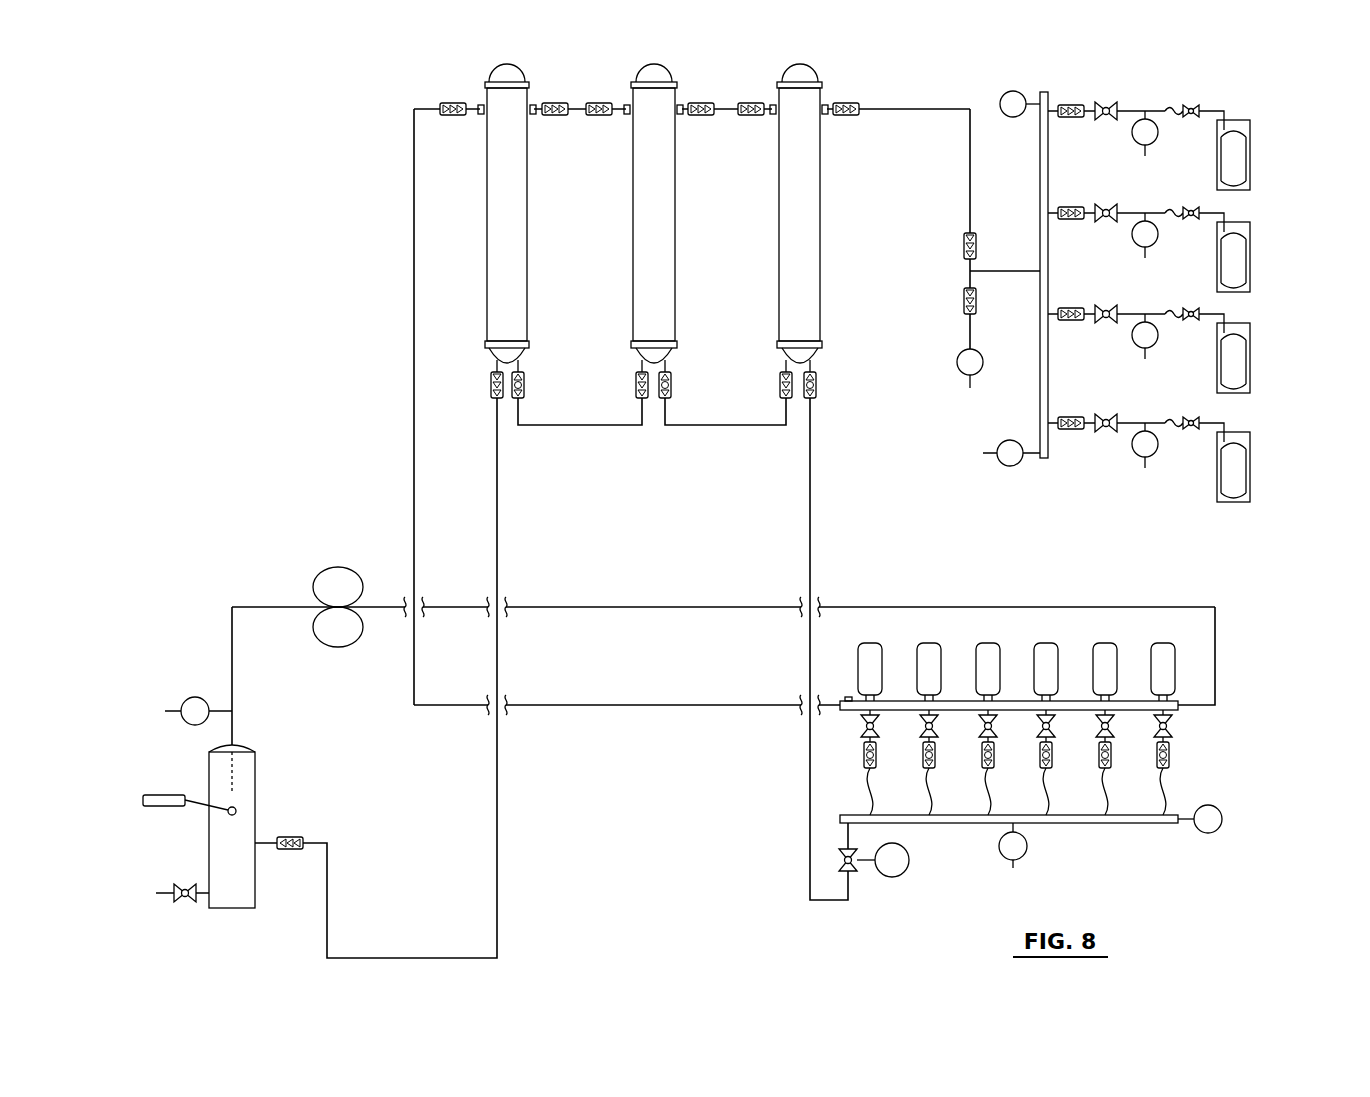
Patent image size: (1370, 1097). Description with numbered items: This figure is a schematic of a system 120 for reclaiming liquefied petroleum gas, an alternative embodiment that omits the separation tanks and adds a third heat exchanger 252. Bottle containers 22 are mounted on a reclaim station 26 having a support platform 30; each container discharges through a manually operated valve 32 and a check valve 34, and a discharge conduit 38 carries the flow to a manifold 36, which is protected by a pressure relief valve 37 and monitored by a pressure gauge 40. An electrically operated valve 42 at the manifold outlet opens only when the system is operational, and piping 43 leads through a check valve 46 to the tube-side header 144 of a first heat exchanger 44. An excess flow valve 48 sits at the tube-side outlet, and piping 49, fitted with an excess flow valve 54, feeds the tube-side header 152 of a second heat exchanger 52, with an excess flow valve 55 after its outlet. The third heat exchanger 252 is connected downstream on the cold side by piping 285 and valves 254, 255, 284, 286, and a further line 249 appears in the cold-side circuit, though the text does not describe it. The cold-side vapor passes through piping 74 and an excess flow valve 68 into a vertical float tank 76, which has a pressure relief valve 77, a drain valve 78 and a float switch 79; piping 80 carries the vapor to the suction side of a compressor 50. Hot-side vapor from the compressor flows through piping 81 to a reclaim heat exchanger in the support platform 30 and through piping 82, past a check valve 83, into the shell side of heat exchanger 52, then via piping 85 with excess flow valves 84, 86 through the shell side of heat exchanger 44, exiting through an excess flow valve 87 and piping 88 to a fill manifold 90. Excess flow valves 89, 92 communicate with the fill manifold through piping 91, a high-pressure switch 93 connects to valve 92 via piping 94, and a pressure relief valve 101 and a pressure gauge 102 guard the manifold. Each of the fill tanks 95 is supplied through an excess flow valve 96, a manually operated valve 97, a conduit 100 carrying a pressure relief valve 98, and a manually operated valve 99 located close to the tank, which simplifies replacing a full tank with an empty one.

The system for reclaiming LPG 120 is at (276, 194).
The check valve 83 is at (452, 103).
The valve 284 is at (553, 103).
The piping 285 is at (594, 103).
The valve 286 is at (600, 116).
The piping 85 is at (728, 109).
The excess flow valve 87 is at (850, 103).
The pressure gauge 102 is at (1000, 95).
The excess flow valve 96 is at (1071, 103).
The manually operated valve 97 is at (1110, 103).
The conduit 100 is at (1191, 103).
The manually operated valve 99 is at (1226, 106).
The fill tank 95 is at (1250, 152).
The excess flow valve 84 is at (700, 116).
The excess flow valve 86 is at (750, 116).
The piping 88 is at (932, 113).
The fill manifold 90 is at (1040, 175).
The piping 91 is at (1005, 271).
The pressure relief valve 98 is at (1138, 147).
The third heat exchanger 252 is at (527, 250).
The second heat exchanger 52 is at (675, 250).
The first heat exchanger 44 is at (820, 230).
The excess flow valve 89 is at (962, 245).
The excess flow valve 92 is at (962, 298).
The piping 94 is at (976, 332).
The piping 82 is at (414, 295).
The tube-side header 152 is at (660, 352).
The valve 254 is at (530, 375).
The excess flow valve 54 is at (673, 380).
The tube-side header 144 is at (826, 350).
The valve 255 is at (490, 385).
The excess flow valve 55 is at (636, 390).
The excess flow valve 48 is at (780, 388).
The pressure switch 93 is at (960, 375).
The check valve 46 is at (818, 390).
The conduit 249 is at (573, 426).
The piping 49 is at (700, 426).
The pressure relief valve 101 is at (1020, 466).
The compressor 50 is at (335, 568).
The piping 80 is at (232, 605).
The piping 74 is at (497, 517).
The piping 43 is at (810, 515).
The piping 81 is at (970, 605).
The pressure relief valve 77 is at (190, 697).
The container 22 is at (1058, 670).
The reclaim station 26 is at (1262, 682).
The valve 32 is at (1180, 725).
The check valve 34 is at (1185, 755).
The discharge conduit 38 is at (1180, 786).
The support platform 30 is at (843, 712).
The float switch 79 is at (150, 796).
The vertical float tank 76 is at (180, 834).
The drain valve 78 is at (180, 905).
The excess flow valve 68 is at (288, 852).
The electrically operated valve 42 is at (888, 878).
The pressure relief valve 37 is at (1005, 866).
The manifold 36 is at (1120, 824).
The pressure gauge 40 is at (1218, 830).